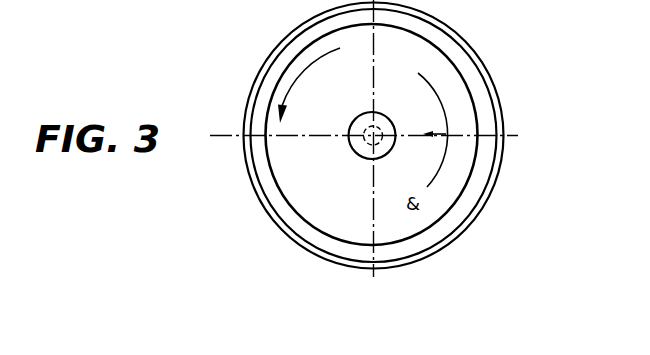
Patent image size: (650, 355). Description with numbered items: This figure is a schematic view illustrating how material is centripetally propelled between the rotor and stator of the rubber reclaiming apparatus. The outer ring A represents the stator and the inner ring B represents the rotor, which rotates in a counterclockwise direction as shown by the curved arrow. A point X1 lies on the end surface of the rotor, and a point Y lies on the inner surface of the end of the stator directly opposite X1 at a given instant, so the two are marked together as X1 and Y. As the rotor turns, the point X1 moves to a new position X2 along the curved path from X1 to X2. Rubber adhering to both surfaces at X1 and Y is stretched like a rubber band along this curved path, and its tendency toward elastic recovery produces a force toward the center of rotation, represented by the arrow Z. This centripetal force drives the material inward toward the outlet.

The stator A is at (506, 175).
The rotor B is at (470, 76).
The second position of the rotor point X2 is at (427, 187).
The arrow representing centripetal force Z is at (434, 124).
The point on the end surface of the rotor X1 is at (406, 145).
The point on the inner surface of the end of the stator Y is at (433, 200).